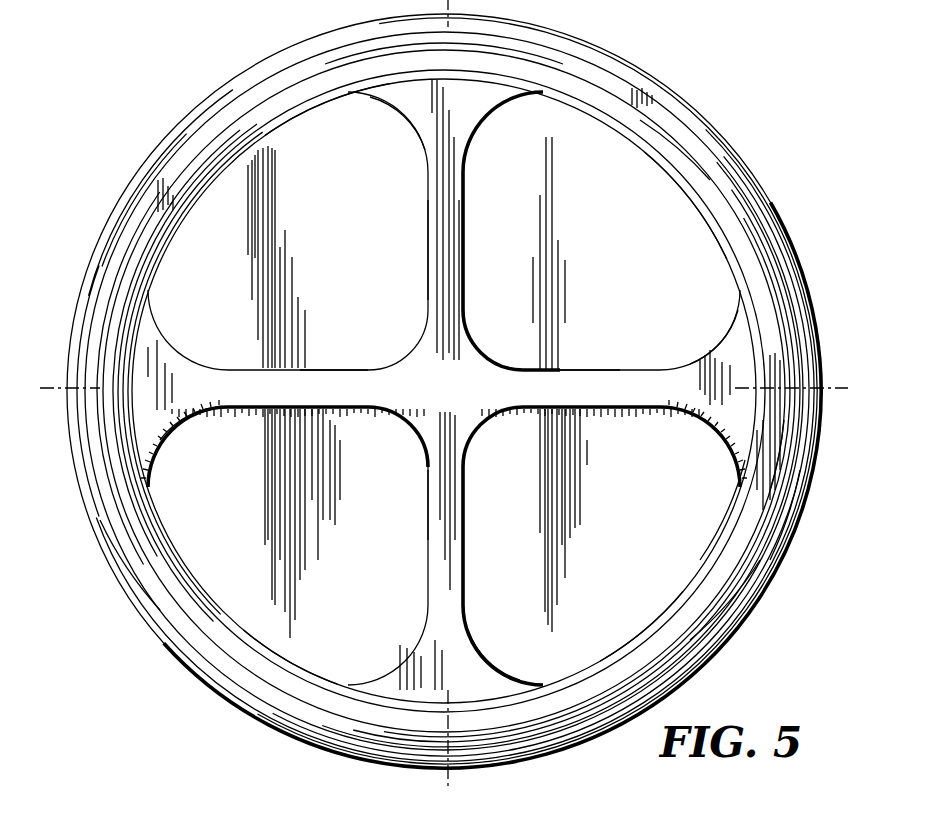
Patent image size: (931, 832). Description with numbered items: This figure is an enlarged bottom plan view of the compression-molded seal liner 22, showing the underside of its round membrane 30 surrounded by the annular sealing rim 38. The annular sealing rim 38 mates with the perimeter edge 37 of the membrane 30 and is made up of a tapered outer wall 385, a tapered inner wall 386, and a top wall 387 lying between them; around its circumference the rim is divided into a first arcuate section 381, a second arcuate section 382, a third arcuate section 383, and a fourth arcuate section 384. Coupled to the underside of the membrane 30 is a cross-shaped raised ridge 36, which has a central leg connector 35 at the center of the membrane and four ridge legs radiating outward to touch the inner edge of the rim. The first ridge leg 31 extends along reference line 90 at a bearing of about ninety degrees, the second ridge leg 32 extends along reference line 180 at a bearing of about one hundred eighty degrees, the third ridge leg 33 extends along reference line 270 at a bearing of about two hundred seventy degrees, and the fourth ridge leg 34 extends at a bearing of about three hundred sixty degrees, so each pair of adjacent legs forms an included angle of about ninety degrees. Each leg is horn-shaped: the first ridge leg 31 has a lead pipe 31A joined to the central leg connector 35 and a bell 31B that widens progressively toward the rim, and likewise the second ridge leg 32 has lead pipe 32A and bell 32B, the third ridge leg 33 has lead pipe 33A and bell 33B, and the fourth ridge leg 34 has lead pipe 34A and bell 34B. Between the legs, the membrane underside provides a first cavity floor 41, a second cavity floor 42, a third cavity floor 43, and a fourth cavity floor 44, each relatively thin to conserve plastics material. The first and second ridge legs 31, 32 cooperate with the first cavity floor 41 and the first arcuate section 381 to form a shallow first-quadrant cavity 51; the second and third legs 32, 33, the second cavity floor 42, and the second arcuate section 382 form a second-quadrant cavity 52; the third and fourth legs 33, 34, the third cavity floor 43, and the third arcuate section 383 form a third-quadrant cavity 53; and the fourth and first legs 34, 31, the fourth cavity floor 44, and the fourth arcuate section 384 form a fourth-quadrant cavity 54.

The seal liner 22 is at (457, 391).
The round membrane 30 is at (293, 147).
The first ridge leg 31 is at (635, 388).
The lead pipe 31A is at (566, 372).
The bell 31B is at (727, 347).
The second ridge leg 32 is at (445, 551).
The lead pipe 32A is at (465, 478).
The bell 32B is at (468, 665).
The third ridge leg 33 is at (273, 388).
The lead pipe 33A is at (343, 398).
The bell 33B is at (155, 417).
The fourth ridge leg 34 is at (445, 220).
The lead pipe 34A is at (433, 284).
The bell 34B is at (407, 113).
The central leg connector 35 is at (433, 378).
The cross-shaped raised ridge 36 is at (466, 226).
The perimeter edge 37 is at (178, 247).
The annular sealing rim 38 is at (230, 77).
The first cavity floor 41 is at (626, 510).
The second cavity floor 42 is at (256, 501).
The third cavity floor 43 is at (340, 242).
The fourth cavity floor 44 is at (638, 277).
The first-quadrant cavity 51 is at (622, 594).
The second-quadrant cavity 52 is at (315, 618).
The third-quadrant cavity 53 is at (346, 136).
The fourth-quadrant cavity 54 is at (655, 231).
The reference line 90 is at (828, 386).
The reference line 180 is at (455, 785).
The reference line 270 is at (45, 385).
The first arcuate section 381 is at (717, 580).
The second arcuate section 382 is at (147, 590).
The third arcuate section 383 is at (200, 158).
The fourth arcuate section 384 is at (670, 143).
The tapered outer wall 385 is at (787, 515).
The tapered inner wall 386 is at (728, 510).
The top wall 387 is at (768, 472).